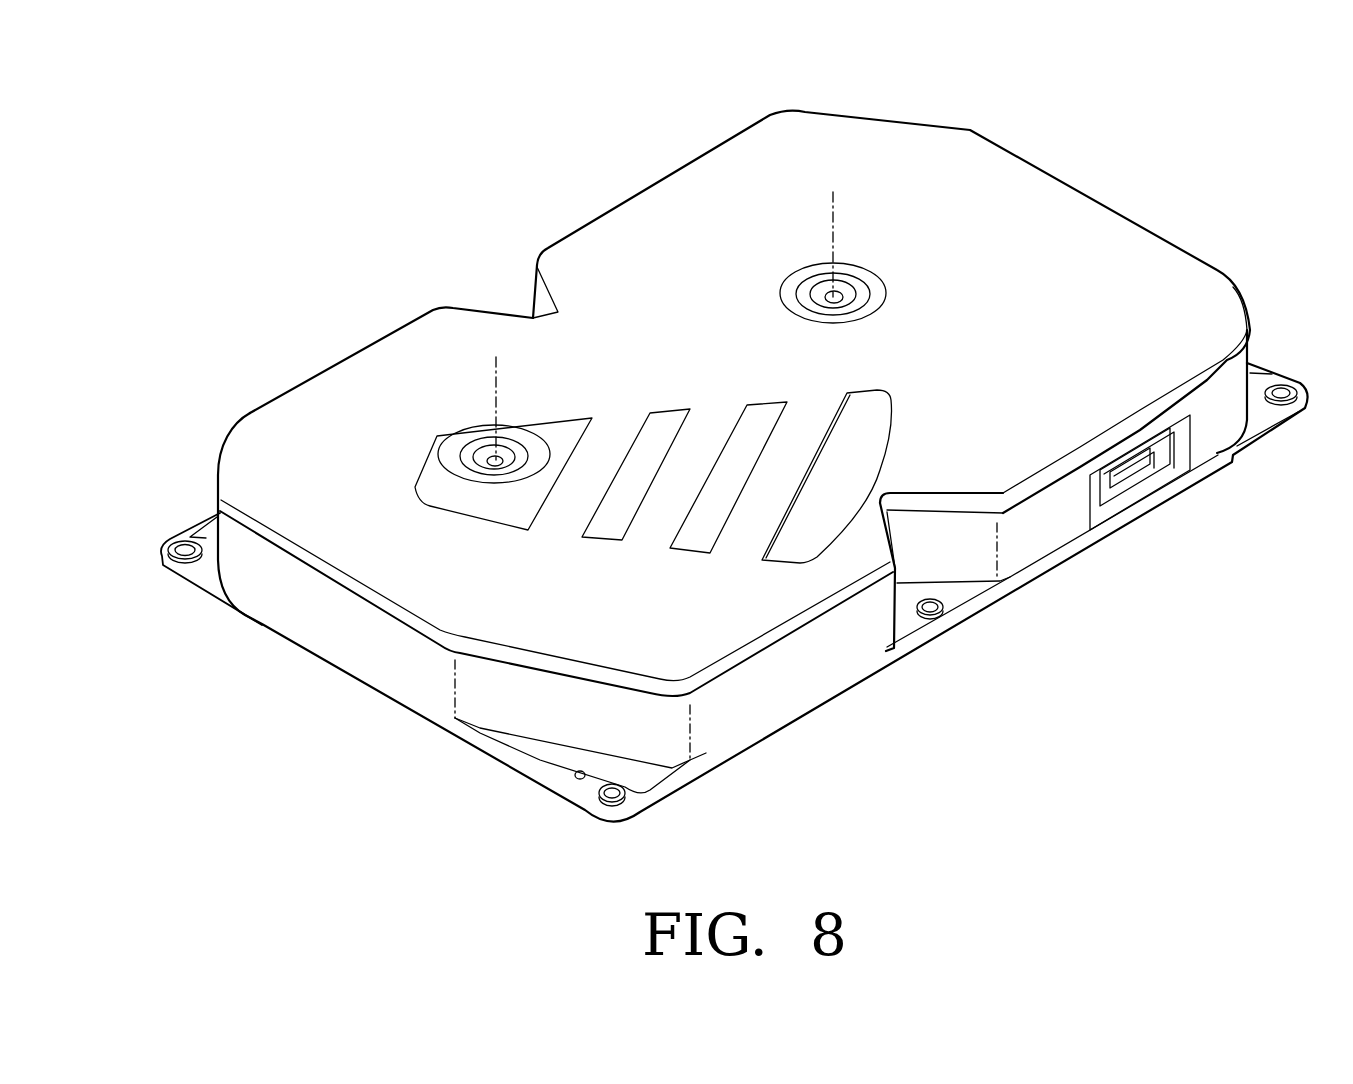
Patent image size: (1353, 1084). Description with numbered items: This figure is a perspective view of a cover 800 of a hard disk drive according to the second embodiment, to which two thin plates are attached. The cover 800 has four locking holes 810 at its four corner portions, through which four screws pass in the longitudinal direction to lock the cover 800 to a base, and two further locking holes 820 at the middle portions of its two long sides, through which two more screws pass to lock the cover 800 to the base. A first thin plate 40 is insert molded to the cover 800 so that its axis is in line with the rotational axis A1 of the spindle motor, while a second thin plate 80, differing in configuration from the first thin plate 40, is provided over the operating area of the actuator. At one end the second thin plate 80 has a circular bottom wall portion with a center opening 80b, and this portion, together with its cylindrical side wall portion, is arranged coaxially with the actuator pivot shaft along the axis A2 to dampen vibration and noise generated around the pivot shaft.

The cover 800 is at (1072, 227).
The first thin plate 40 is at (826, 290).
The rotational axis of the spindle motor A1 is at (834, 212).
The second thin plate 80 is at (665, 428).
The center opening 80b is at (493, 457).
The actuator pivot axis A2 is at (497, 378).
The locking holes 810 is at (183, 553).
The locking holes 820 is at (940, 610).